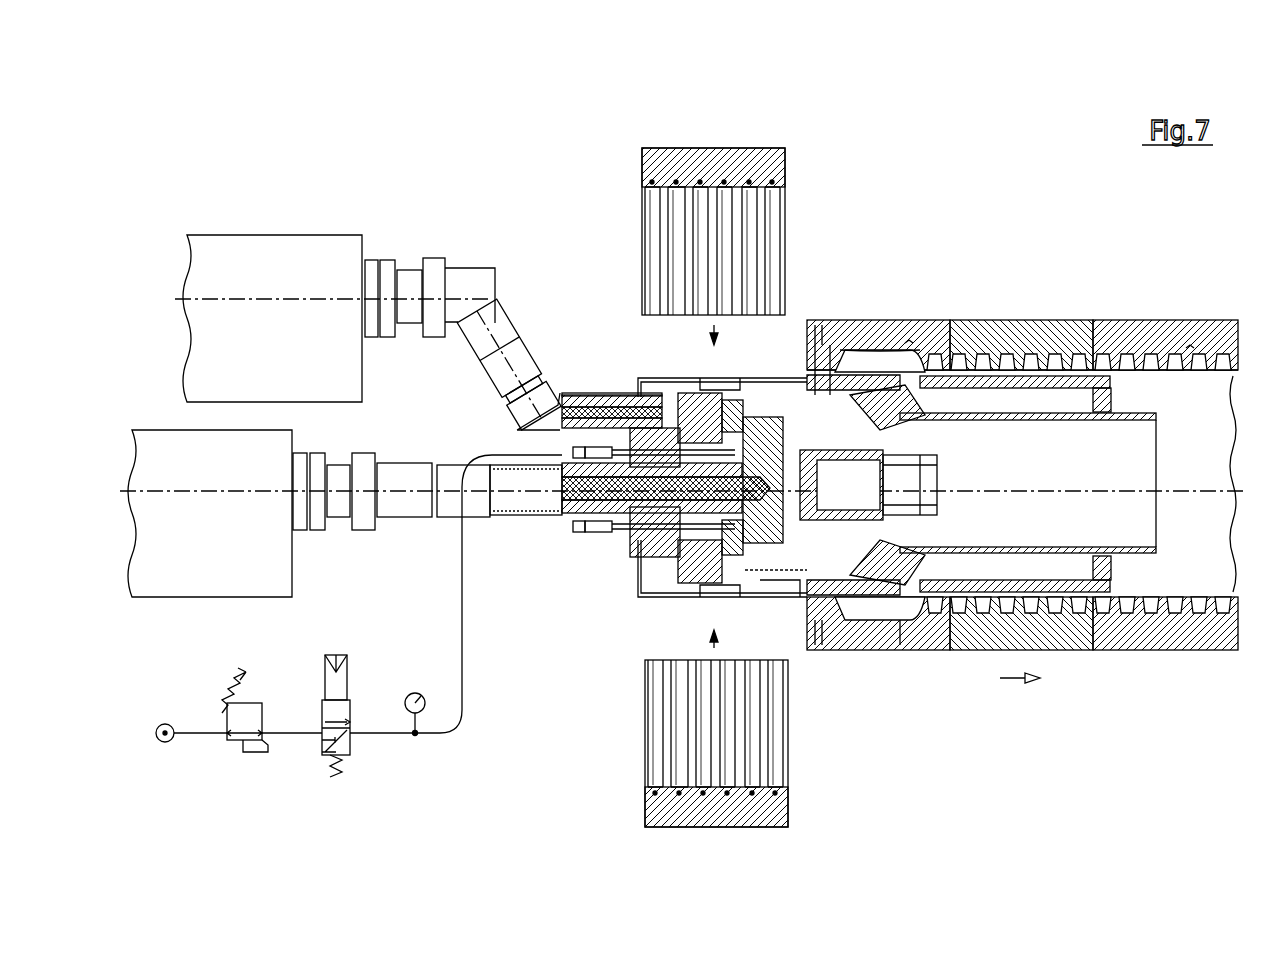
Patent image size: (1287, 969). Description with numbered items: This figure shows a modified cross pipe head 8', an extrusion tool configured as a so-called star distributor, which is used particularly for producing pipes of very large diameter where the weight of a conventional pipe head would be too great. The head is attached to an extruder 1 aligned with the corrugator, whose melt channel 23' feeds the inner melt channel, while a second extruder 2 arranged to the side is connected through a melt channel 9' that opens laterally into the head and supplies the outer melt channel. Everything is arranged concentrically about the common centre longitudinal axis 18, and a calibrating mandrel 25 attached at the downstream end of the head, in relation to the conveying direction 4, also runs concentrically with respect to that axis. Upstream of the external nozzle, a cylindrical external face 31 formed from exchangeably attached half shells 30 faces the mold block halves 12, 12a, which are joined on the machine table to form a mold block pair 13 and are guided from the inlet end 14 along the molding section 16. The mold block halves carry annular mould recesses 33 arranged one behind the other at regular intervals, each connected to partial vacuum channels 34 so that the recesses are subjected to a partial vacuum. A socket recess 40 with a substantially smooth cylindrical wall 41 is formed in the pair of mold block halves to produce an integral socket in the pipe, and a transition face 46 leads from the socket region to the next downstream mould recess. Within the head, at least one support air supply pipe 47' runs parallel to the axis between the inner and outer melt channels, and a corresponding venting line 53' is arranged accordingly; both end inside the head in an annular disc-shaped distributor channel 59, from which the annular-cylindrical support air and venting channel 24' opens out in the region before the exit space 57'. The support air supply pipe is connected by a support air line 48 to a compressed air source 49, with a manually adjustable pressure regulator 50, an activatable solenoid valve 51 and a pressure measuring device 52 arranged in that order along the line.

The extruder 1 is at (225, 469).
The extruder 2 is at (285, 279).
The conveying direction 4 is at (1010, 682).
The modified cross pipe head 8' is at (612, 316).
The melt channel 9' is at (669, 456).
The mold block half 12 is at (708, 461).
The mold block half 12a is at (790, 812).
The mold block pair 13 is at (986, 320).
The inlet end 14 is at (774, 630).
The molding section 16 is at (1112, 652).
The centre longitudinal axis 18 is at (1163, 478).
The melt channel 23' is at (526, 536).
The support air and venting channel 24' is at (848, 677).
The calibrating mandrel 25 is at (1068, 371).
The half shells 30 is at (660, 380).
The cylindrical external face 31 is at (757, 598).
The annular mould recesses 33 is at (648, 196).
The partial vacuum channels 34 is at (910, 343).
The socket recess 40 is at (880, 362).
The cylindrical wall 41 is at (908, 640).
The transition face 46 is at (814, 325).
The support air supply pipe 47' is at (610, 378).
The support air line 48 is at (462, 665).
The compressed air source 49 is at (165, 745).
The manually adjustable pressure regulator 50 is at (243, 725).
The activatable solenoid valve 51 is at (345, 745).
The pressure measuring device 52 is at (423, 713).
The venting line 53' is at (649, 527).
The exit space 57' is at (868, 415).
The annular disc-shaped distributor channel 59 is at (742, 393).